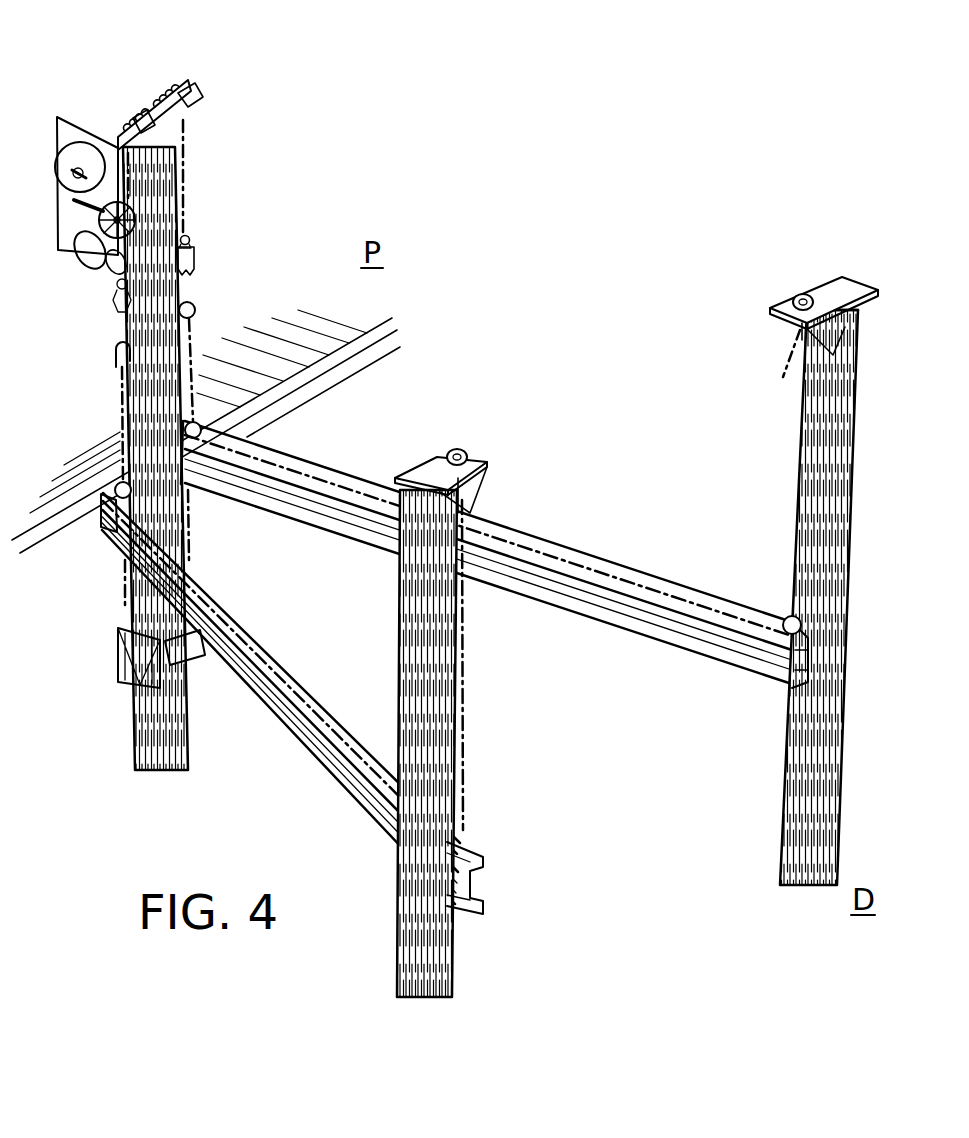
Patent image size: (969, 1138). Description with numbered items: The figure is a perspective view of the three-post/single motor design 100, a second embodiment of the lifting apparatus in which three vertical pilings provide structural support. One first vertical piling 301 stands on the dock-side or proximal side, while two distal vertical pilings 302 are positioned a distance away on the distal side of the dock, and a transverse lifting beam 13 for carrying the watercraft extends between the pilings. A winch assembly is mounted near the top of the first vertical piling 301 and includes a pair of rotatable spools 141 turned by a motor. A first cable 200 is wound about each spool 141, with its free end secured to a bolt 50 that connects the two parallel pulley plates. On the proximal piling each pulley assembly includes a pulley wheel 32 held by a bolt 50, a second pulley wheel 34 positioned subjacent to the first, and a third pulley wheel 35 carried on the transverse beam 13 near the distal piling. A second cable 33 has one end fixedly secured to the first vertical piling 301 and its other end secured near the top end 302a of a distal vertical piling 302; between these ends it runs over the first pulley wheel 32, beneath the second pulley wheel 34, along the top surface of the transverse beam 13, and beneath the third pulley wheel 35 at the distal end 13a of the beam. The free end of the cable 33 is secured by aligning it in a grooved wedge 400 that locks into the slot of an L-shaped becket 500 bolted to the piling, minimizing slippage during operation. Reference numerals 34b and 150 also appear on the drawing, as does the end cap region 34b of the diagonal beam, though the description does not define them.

The three-post/single motor design 100 is at (553, 258).
The transverse lifting beam 13 is at (565, 542).
The distal end of transverse beam 13a is at (770, 690).
The pulley wheel 32 is at (199, 310).
The second cable 33 is at (195, 340).
The second pulley wheel 34 is at (103, 497).
The diagonal rail end cap 34b is at (97, 545).
The third pulley wheel 35 is at (788, 617).
The bolt 50 is at (205, 240).
The rotatable spool 141 is at (128, 150).
The pulley block 150 is at (199, 268).
The first cable 200 is at (188, 160).
The first vertical piling 301 is at (178, 735).
The distal vertical piling 302 is at (420, 652).
The top end of distal vertical piling 302a is at (863, 317).
The grooved wedge 400 is at (463, 452).
The L-shaped becket 500 is at (428, 470).